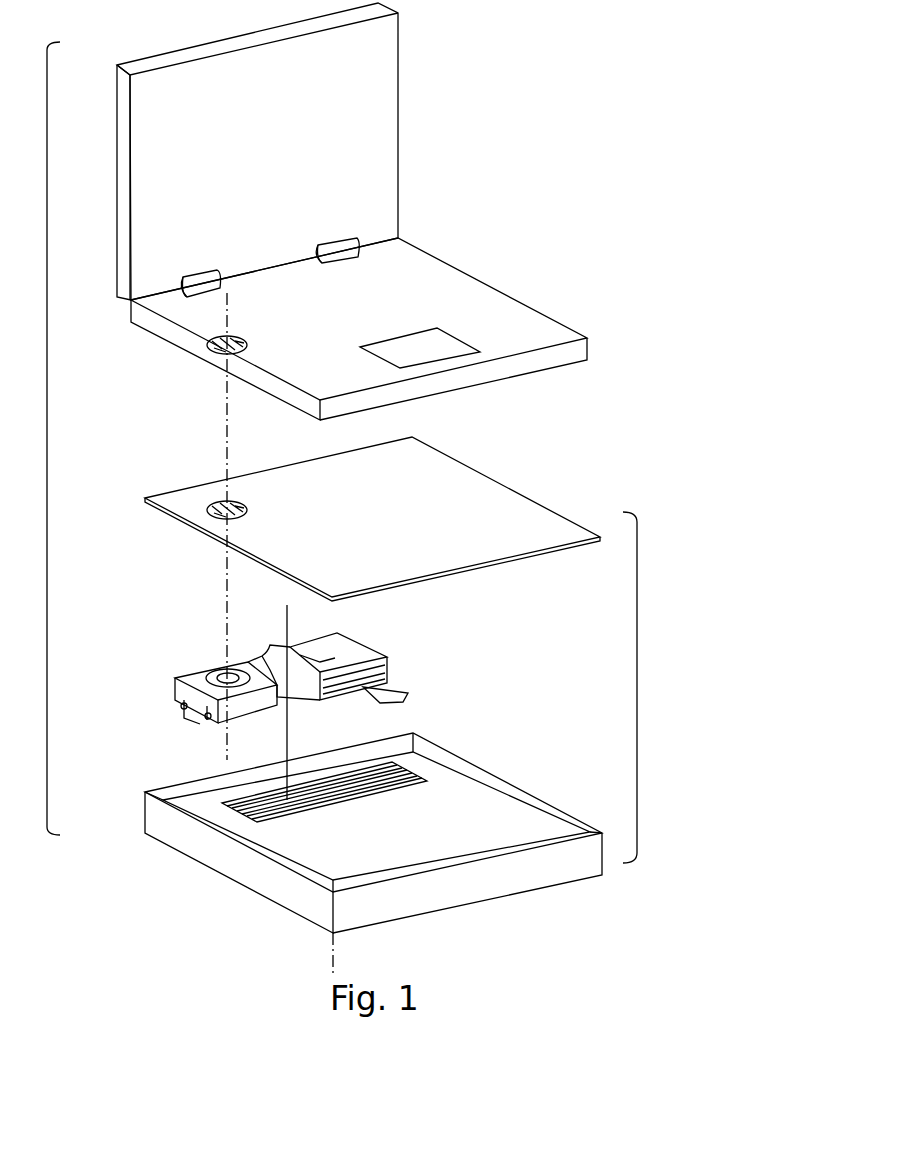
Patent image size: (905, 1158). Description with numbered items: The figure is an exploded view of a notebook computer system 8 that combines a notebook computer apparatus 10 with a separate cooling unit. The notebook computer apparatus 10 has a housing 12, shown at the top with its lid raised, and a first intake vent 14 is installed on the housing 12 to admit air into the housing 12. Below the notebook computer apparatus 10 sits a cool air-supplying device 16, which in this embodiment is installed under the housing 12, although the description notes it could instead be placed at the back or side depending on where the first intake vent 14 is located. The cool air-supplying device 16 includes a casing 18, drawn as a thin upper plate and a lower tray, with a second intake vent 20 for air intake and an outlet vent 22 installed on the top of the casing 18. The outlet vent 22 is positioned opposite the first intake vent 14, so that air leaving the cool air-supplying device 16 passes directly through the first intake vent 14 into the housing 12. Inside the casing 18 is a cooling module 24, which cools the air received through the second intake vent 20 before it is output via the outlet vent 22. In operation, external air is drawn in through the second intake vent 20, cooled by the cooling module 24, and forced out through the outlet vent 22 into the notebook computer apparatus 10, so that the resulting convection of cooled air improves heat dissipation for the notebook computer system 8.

The notebook computer system 8 is at (47, 470).
The notebook computer apparatus 10 is at (448, 118).
The housing 12 is at (133, 322).
The first intake vent 14 is at (218, 352).
The cool air-supplying device 16 is at (640, 680).
The casing 18 is at (460, 460).
The second intake vent 20 is at (327, 778).
The outlet vent 22 is at (208, 490).
The cooling module 24 is at (362, 638).